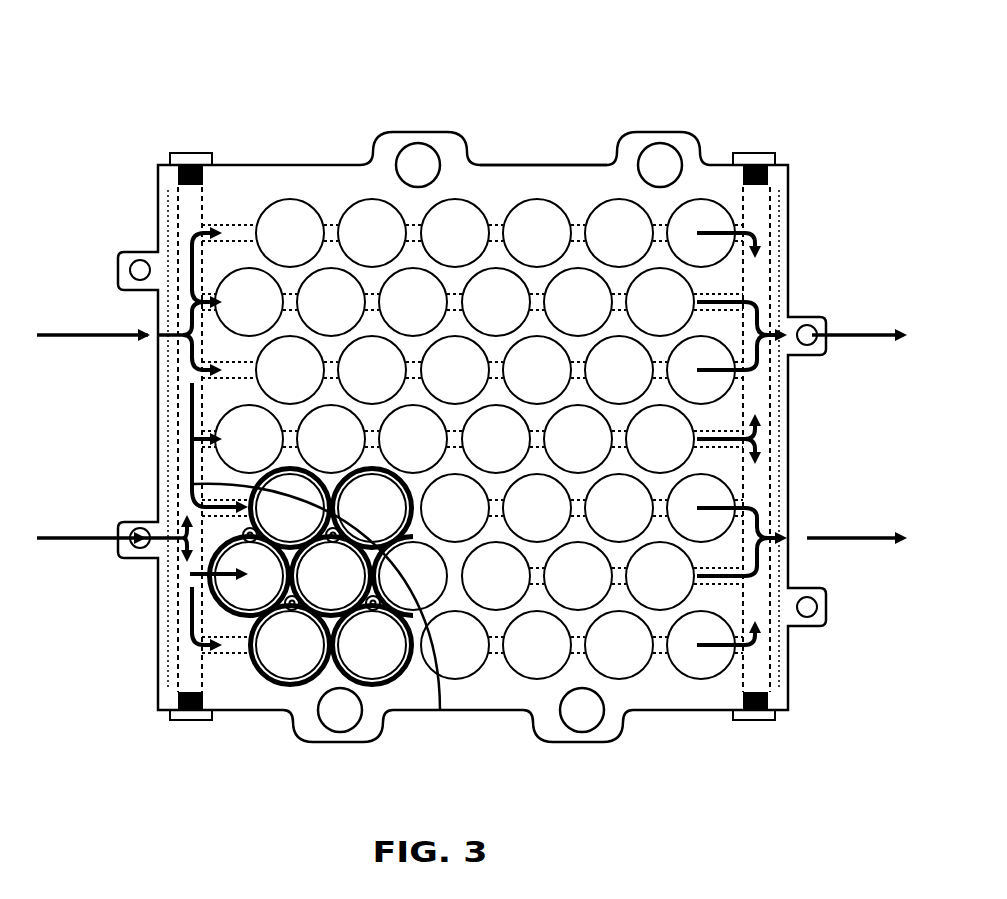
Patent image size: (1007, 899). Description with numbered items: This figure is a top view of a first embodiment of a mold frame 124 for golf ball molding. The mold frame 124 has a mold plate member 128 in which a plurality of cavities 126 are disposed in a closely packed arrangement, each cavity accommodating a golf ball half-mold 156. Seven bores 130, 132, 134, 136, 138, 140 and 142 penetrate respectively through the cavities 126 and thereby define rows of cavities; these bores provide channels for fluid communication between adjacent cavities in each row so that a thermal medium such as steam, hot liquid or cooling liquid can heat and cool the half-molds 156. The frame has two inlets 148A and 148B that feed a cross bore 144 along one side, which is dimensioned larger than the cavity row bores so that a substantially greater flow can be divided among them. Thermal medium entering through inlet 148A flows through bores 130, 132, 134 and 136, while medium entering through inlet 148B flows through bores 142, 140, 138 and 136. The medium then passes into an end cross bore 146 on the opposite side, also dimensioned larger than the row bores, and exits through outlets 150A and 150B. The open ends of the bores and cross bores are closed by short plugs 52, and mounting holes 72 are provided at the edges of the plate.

The short plugs 52 is at (188, 152).
The mounting hole 72 is at (413, 157).
The mold frame 124 is at (300, 158).
The cavities 126 is at (705, 650).
The mold plate member 128 is at (514, 178).
The bore 130 is at (246, 233).
The bore 132 is at (250, 338).
The bore 134 is at (242, 370).
The bore 136 is at (215, 396).
The bore 138 is at (223, 495).
The bore 140 is at (453, 580).
The bore 142 is at (240, 652).
The cross bore 144 is at (190, 660).
The end cross bore 146 is at (758, 667).
The inlet 148A is at (106, 300).
The inlet 148B is at (138, 583).
The outlet 150A is at (802, 301).
The outlet 150B is at (802, 529).
The golf ball half-molds 156 is at (263, 590).